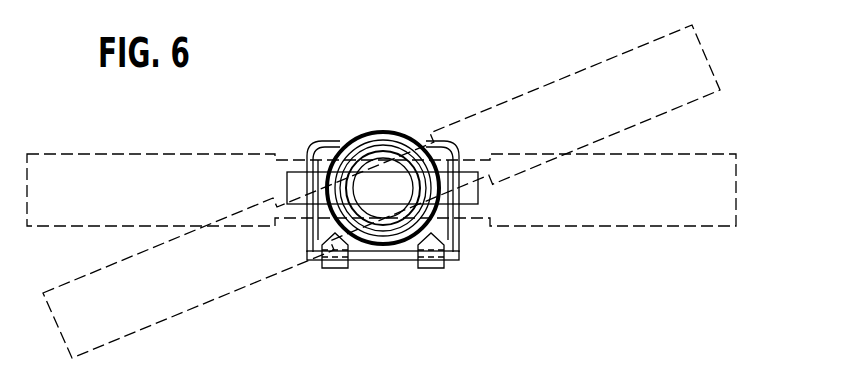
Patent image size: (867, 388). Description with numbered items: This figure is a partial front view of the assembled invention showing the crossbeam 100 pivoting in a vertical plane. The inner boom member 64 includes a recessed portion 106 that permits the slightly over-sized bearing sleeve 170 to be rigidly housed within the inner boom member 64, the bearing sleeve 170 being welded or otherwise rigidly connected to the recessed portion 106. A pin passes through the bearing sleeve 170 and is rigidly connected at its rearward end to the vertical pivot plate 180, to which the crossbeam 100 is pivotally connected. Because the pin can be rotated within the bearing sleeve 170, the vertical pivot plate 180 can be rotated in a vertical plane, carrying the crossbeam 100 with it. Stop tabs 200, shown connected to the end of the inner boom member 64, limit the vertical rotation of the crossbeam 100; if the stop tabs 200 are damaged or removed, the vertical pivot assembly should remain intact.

The crossbeam 100 is at (626, 108).
The recessed portion 106 is at (325, 143).
The bearing sleeve 170 is at (406, 139).
The vertical pivot plate 180 is at (300, 178).
The stop tabs 200 is at (432, 268).
The inner boom member 64 is at (462, 259).